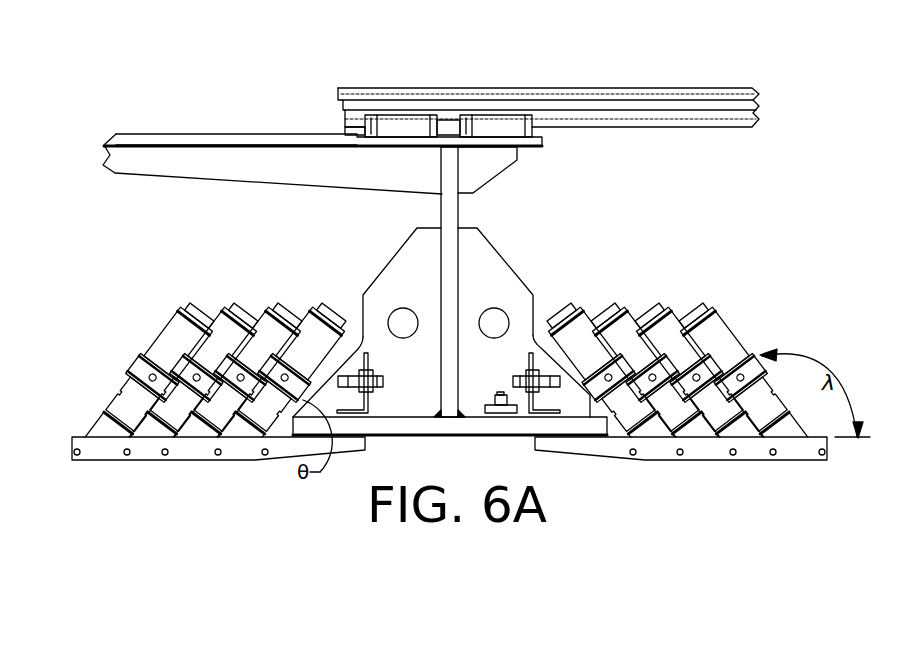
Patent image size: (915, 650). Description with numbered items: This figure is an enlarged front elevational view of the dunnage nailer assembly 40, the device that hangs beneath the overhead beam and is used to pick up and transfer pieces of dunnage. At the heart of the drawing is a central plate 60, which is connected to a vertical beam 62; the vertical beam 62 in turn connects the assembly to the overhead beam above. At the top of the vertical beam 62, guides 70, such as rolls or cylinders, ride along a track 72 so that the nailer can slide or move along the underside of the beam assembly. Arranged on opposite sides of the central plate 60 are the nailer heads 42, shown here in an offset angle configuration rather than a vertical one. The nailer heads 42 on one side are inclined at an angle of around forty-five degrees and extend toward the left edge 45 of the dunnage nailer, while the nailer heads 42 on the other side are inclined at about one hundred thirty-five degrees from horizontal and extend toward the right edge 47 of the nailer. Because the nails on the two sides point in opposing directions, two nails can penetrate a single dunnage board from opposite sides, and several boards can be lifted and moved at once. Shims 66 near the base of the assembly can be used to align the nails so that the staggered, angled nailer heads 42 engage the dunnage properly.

The dunnage nailer assembly 40 is at (588, 247).
The nailer head 42 is at (176, 340).
The left edge 45 is at (96, 451).
The right edge 47 is at (805, 451).
The central plate 60 is at (402, 268).
The vertical beam 62 is at (458, 214).
The shims 66 is at (199, 450).
The guides 70 is at (404, 123).
The track 72 is at (627, 113).